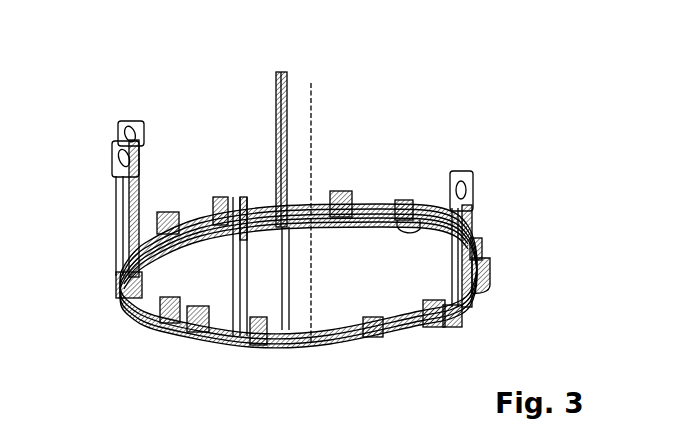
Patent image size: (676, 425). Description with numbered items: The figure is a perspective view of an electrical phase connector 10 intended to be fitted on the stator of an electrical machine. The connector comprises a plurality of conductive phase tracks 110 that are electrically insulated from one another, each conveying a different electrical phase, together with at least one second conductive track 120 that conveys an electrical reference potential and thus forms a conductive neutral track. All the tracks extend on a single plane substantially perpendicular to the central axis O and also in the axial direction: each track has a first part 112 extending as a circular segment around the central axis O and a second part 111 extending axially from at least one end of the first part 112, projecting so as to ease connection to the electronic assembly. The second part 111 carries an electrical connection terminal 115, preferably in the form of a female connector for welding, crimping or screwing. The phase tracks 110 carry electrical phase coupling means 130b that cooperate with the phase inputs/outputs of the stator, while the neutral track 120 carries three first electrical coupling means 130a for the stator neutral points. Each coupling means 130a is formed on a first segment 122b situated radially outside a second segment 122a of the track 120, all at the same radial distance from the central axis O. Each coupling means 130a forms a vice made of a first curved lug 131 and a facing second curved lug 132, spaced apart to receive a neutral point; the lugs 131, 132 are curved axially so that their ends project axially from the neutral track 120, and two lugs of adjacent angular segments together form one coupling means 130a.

The electrical phase connector 10 is at (430, 108).
The conductive phase track 110 is at (291, 196).
The second part 111 is at (276, 130).
The first part 112 is at (340, 332).
The electrical connection terminal 115 is at (282, 72).
The conductive neutral track 120 is at (265, 204).
The second segment 122a is at (143, 290).
The first segment 122b is at (240, 300).
The first electrical coupling means 130a is at (222, 195).
The electrical phase coupling means 130b is at (164, 206).
The first curved lug 131 is at (350, 192).
The second curved lug 132 is at (343, 188).
The central axis O is at (311, 84).